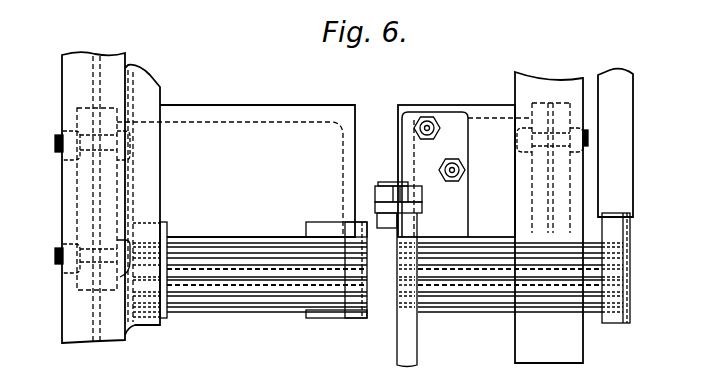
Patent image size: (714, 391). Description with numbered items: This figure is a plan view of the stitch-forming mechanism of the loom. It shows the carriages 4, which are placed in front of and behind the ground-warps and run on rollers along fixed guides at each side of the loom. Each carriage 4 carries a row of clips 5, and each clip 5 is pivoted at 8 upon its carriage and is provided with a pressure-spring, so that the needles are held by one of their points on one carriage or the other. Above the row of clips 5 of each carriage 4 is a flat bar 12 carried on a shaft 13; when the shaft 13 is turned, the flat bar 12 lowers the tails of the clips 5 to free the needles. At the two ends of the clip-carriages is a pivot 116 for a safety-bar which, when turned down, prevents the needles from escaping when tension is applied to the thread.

The carriage 4 is at (324, 171).
The clip 5 is at (212, 265).
The pivot 8 is at (343, 232).
The flat bar 12 is at (165, 230).
The shaft 13 is at (344, 207).
The pivot 116 is at (377, 194).